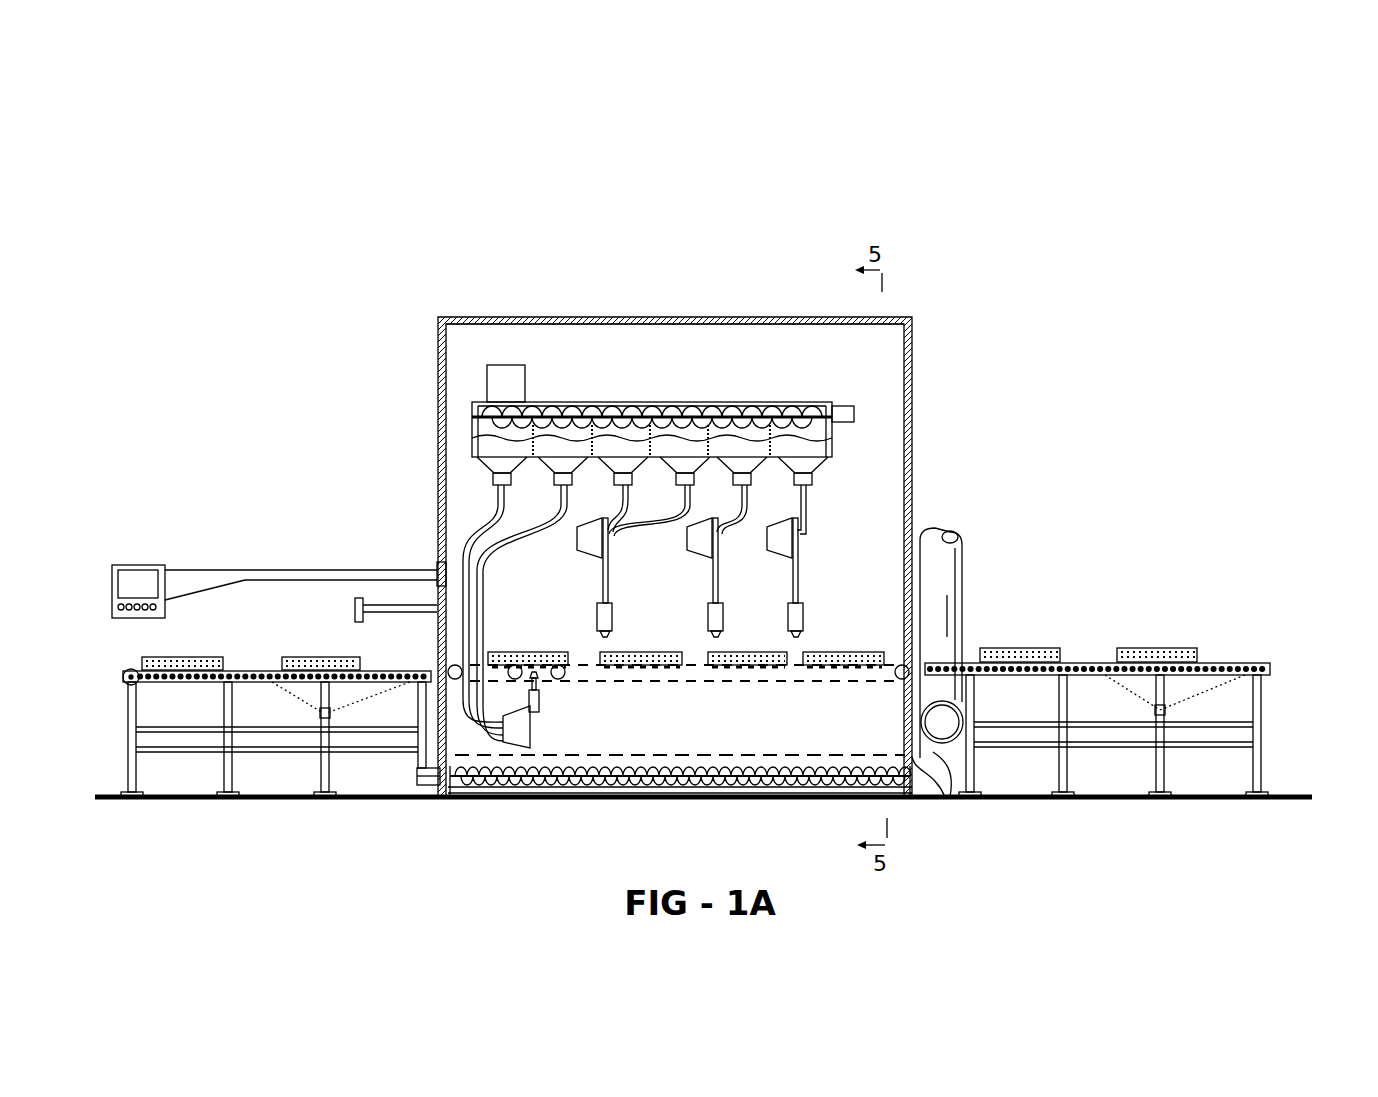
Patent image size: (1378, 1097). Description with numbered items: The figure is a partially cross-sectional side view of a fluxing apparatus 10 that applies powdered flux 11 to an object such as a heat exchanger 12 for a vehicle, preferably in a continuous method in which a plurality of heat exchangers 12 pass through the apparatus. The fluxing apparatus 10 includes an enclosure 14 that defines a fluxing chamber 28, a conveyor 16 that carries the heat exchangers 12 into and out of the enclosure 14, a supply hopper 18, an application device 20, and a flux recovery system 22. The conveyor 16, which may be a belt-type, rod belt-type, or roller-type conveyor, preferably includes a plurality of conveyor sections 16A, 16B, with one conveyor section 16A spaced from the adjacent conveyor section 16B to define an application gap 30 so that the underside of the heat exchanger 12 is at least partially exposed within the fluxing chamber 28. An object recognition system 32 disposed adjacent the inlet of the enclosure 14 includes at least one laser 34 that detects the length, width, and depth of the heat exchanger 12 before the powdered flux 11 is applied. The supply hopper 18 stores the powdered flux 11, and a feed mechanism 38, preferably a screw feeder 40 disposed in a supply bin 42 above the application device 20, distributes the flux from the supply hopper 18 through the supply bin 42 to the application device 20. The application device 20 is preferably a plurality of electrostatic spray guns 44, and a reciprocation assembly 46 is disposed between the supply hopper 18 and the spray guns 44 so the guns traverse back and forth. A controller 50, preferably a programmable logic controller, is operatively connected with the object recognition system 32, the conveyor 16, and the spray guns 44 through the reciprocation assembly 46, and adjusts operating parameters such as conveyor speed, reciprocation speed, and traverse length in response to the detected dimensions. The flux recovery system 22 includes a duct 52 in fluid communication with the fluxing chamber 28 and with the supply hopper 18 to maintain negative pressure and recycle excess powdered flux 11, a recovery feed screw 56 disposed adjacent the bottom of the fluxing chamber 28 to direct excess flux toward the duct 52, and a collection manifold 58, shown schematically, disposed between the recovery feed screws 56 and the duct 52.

The fluxing apparatus 10 is at (668, 214).
The powdered flux 11 is at (822, 441).
The heat exchanger 12 is at (195, 657).
The enclosure 14 is at (762, 317).
The conveyor 16 is at (275, 782).
The conveyor section 16A is at (483, 662).
The conveyor section 16B is at (612, 682).
The supply hopper 18 is at (493, 365).
The application device 20 is at (729, 577).
The flux recovery system 22 is at (956, 522).
The fluxing chamber 28 is at (894, 500).
The application gap 30 is at (546, 680).
The object recognition system 32 is at (393, 578).
The laser 34 is at (360, 622).
The feed mechanism 38 is at (588, 390).
The screw feeder 40 is at (690, 404).
The supply bin 42 is at (486, 380).
The spray gun 44 is at (718, 630).
The reciprocation assembly 46 is at (810, 530).
The controller 50 is at (138, 583).
The duct 52 is at (958, 546).
The recovery feed screw 56 is at (826, 795).
The collection manifold 58 is at (948, 800).